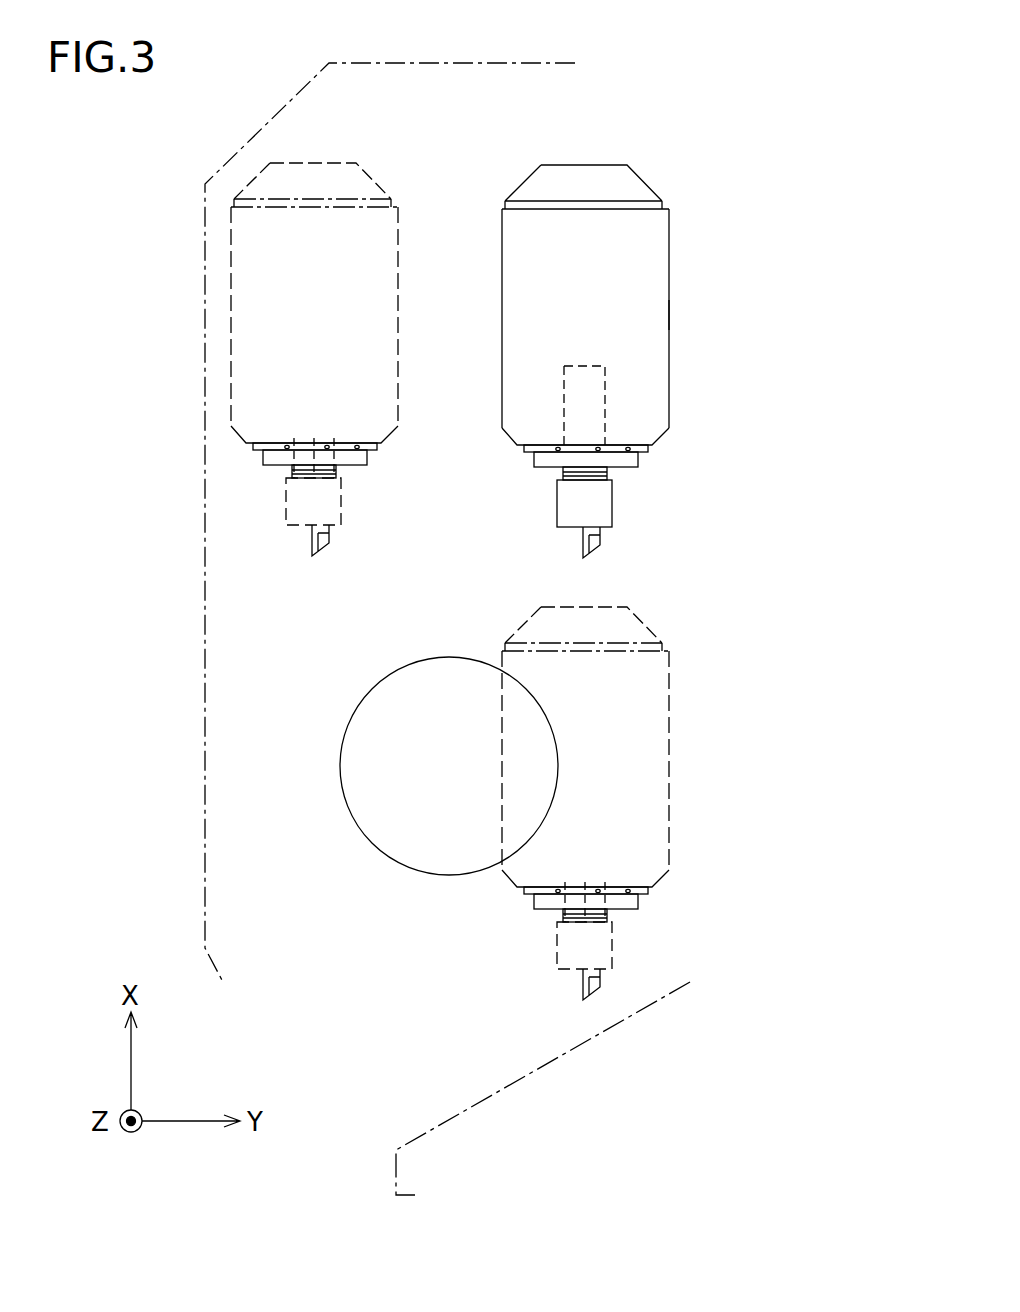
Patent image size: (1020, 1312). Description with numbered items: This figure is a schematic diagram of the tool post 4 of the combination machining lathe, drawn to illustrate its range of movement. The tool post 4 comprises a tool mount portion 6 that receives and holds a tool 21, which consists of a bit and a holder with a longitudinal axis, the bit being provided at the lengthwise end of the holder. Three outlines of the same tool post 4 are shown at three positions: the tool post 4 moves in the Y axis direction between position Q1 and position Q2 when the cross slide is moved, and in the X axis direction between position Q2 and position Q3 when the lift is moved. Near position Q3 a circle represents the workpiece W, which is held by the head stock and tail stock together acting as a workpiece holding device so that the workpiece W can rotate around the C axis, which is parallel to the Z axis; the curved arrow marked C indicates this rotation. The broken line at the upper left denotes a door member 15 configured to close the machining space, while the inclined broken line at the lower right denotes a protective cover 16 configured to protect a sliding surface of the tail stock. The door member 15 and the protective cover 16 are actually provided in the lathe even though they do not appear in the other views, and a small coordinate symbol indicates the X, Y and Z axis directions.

The tool post 4 is at (650, 235).
The tool mount portion 6 is at (598, 397).
The tool 21 is at (598, 505).
The door member 15 is at (204, 312).
The protective cover 16 is at (588, 1042).
The position Q1 is at (314, 341).
The position Q2 is at (695, 318).
The position Q3 is at (611, 803).
The workpiece W is at (397, 866).
The C axis C is at (496, 641).